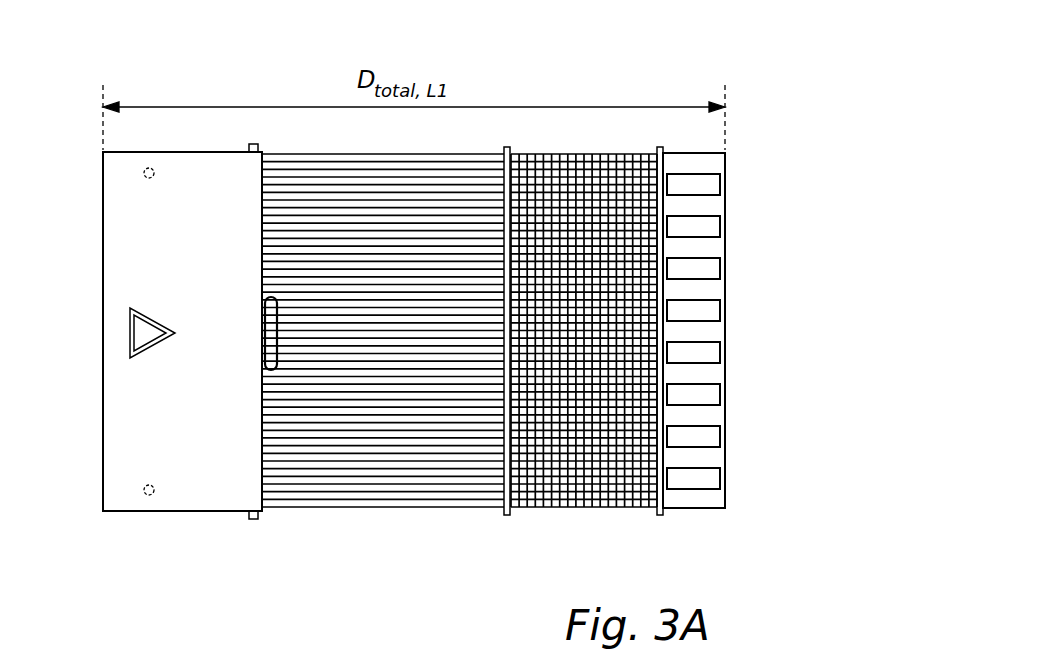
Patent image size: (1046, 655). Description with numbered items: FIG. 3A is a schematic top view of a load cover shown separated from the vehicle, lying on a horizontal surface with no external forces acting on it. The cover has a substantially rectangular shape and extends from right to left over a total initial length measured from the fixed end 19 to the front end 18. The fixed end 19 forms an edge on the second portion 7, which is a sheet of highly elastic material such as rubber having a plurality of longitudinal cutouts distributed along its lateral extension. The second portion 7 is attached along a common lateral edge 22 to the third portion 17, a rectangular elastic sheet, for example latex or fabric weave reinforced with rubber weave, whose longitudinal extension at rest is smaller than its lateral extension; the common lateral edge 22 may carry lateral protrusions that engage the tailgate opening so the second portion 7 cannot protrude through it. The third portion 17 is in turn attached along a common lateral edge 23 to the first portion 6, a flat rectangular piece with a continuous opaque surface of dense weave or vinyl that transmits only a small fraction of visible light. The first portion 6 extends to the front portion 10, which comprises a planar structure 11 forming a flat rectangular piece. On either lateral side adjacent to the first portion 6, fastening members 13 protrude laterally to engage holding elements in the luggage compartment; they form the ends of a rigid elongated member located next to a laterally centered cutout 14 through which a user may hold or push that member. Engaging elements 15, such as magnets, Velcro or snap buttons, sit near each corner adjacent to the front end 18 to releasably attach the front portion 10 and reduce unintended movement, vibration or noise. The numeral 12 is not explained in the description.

The front portion 10 is at (91, 403).
The planar structure 11 is at (185, 484).
The front end 18 is at (102, 311).
The engaging elements 15 is at (150, 168).
The fastening members 13 is at (253, 144).
The cutout 14 is at (272, 320).
The first portion 6 is at (372, 490).
The common lateral edge 23 is at (506, 517).
The third portion 17 is at (575, 478).
The common lateral edge 22 is at (660, 517).
The fixed end 19 is at (727, 331).
The second portion 7 is at (708, 510).
The base 12 is at (177, 653).